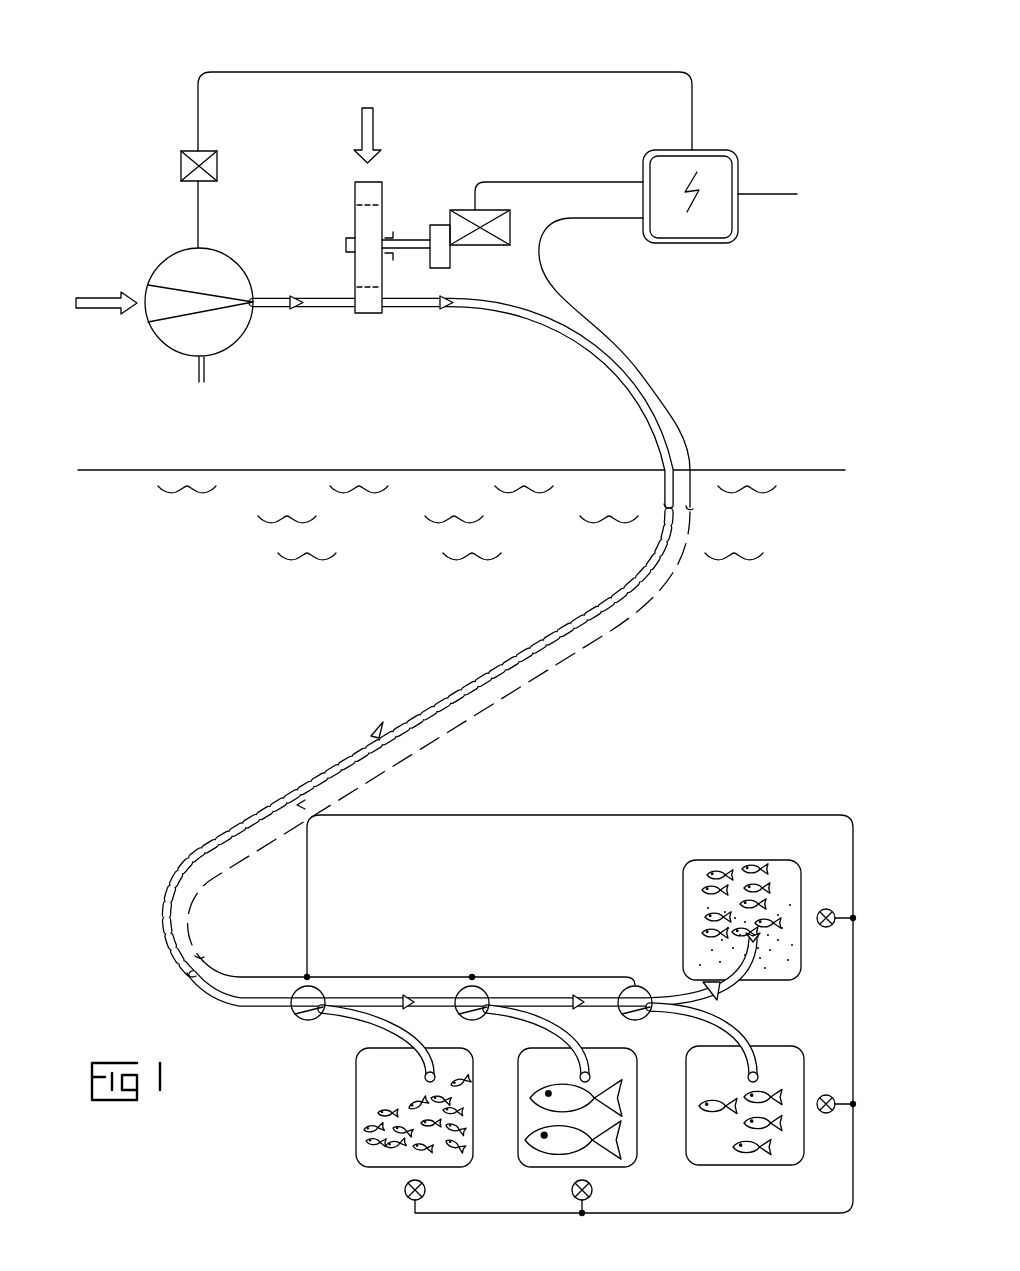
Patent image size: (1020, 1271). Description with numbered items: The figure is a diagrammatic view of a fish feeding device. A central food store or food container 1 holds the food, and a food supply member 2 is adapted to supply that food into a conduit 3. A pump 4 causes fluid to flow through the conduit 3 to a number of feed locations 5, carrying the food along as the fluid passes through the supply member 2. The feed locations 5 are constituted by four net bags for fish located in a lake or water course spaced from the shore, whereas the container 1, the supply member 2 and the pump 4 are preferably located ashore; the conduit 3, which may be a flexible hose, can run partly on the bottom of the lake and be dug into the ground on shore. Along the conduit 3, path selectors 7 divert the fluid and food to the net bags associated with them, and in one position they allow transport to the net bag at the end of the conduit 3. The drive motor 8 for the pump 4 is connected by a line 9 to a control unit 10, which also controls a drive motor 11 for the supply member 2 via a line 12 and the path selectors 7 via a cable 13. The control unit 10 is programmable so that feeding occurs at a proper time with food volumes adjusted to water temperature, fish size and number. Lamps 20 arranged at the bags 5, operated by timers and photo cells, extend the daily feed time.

The food container 1 is at (377, 125).
The food supply member 2 is at (353, 218).
The conduit 3 is at (560, 328).
The pump 4 is at (232, 257).
The feed locations 5 is at (533, 1060).
The path selectors 7 is at (322, 990).
The drive motor 8 is at (218, 165).
The line 9 is at (505, 71).
The control unit 10 is at (713, 163).
The drive motor 11 is at (475, 212).
The line 12 is at (563, 182).
The cable 13 is at (650, 372).
The lamps 20 is at (570, 1188).